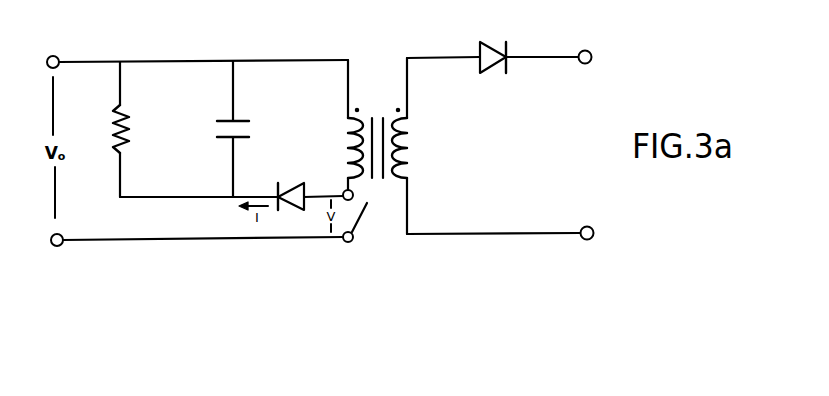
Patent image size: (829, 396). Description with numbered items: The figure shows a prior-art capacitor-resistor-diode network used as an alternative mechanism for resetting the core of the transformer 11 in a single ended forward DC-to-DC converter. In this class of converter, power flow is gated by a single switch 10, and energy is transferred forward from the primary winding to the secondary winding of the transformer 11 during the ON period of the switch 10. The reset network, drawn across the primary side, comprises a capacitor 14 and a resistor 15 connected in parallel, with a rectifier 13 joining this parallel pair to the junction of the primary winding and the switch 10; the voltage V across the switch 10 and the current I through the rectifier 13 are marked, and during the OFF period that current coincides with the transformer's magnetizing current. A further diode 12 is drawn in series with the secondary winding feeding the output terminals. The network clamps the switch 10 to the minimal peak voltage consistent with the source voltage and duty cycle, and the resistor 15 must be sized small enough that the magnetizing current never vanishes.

The switch 10 is at (364, 218).
The transformer 11 is at (372, 116).
The output diode 12 is at (509, 39).
The rectifier 13 is at (279, 183).
The capacitor 14 is at (249, 121).
The resistor 15 is at (128, 118).